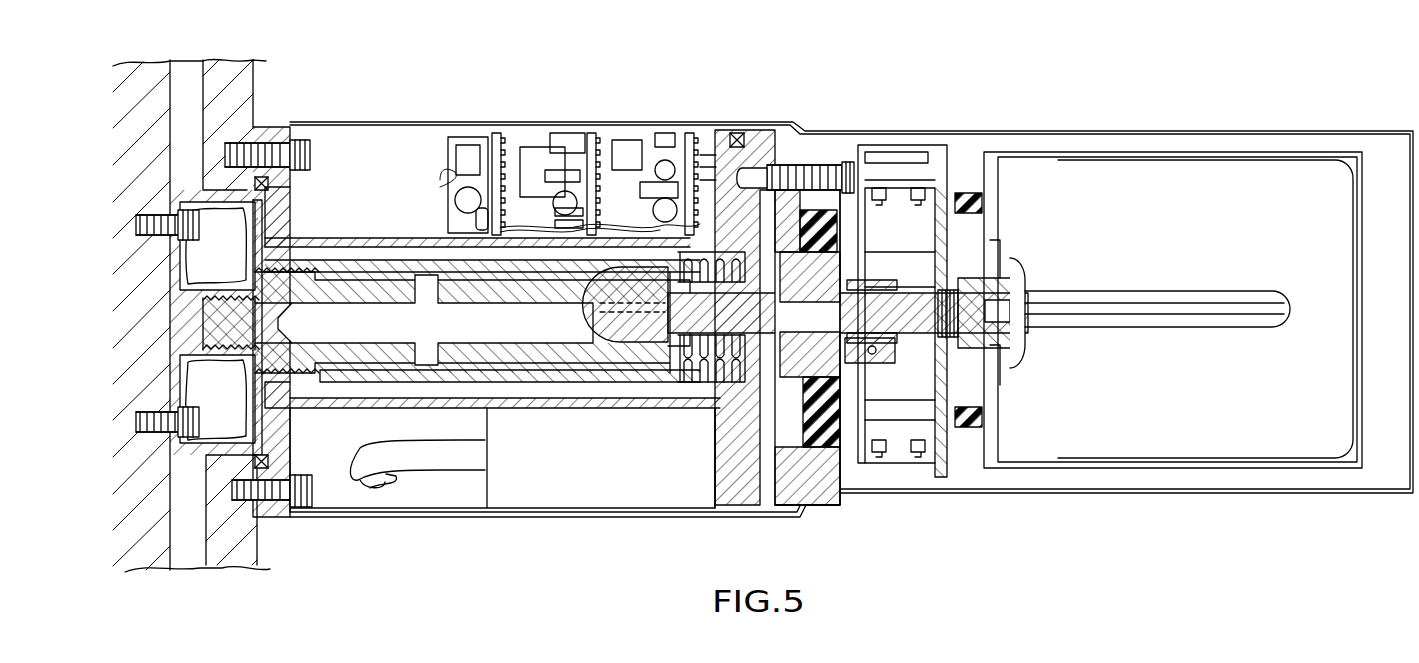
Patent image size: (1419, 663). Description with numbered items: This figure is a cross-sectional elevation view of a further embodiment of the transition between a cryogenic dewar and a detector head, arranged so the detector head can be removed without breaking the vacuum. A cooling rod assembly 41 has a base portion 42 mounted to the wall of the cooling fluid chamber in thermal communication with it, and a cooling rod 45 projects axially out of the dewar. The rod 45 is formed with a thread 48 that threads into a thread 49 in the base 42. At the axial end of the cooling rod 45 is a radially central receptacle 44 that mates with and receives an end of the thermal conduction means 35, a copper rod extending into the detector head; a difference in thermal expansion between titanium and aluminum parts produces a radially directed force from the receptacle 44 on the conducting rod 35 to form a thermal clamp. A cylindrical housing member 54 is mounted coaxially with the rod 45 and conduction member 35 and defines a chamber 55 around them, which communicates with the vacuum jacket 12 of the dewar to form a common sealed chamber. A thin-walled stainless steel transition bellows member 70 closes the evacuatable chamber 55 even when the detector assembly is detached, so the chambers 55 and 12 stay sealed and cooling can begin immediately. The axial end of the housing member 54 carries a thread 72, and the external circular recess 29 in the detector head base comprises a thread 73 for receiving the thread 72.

The vacuum jacket 12 is at (190, 68).
The external circular recess 29 is at (750, 265).
The thermal conduction means 35 is at (840, 290).
The cooling rod assembly 41 is at (436, 250).
The base portion 42 is at (180, 300).
The radially central receptacle 44 is at (634, 262).
The cooling rod 45 is at (395, 251).
The thread 48 is at (212, 345).
The thread 49 is at (238, 350).
The cylindrical housing member 54 is at (512, 232).
The chamber 55 is at (606, 233).
The transition bellows member 70 is at (718, 250).
The thread 72 is at (745, 262).
The thread 73 is at (758, 235).